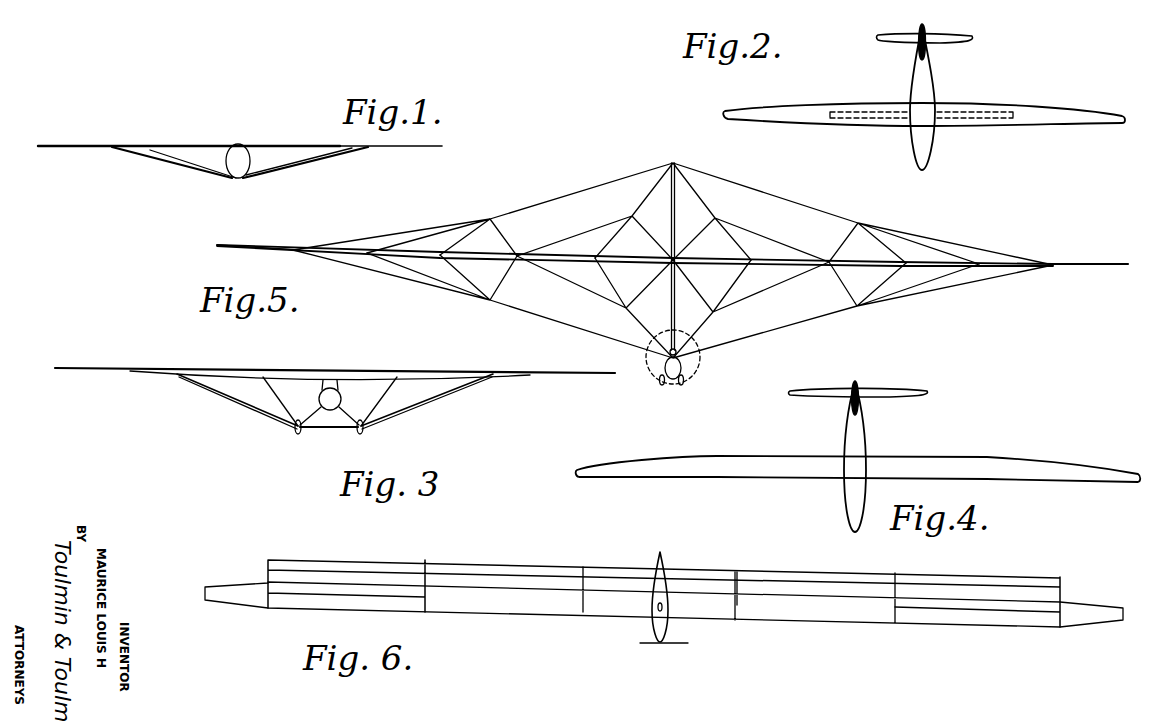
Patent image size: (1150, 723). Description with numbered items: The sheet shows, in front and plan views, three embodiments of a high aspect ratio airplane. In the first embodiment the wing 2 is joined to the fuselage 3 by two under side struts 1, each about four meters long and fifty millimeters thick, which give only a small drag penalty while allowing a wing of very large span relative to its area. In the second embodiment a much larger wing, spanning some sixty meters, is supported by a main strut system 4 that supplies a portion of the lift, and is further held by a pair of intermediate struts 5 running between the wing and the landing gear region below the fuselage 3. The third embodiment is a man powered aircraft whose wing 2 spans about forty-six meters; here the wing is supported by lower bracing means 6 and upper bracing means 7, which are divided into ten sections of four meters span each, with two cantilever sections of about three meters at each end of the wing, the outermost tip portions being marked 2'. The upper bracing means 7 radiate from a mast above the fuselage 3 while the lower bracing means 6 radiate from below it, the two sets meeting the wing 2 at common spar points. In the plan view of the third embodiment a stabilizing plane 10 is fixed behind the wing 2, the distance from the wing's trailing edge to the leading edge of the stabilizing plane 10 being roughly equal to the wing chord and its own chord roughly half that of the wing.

In FIG. 1, the under side struts 1 is at (196, 166).
In FIG. 2, the under side struts 1 is at (985, 113).
In FIG. 1, the wing 2 is at (240, 159).
In FIG. 2, the wing 2 is at (924, 106).
In FIG. 5, the wing 2 is at (672, 224).
In FIG. 3, the wing 2 is at (335, 362).
In FIG. 4, the wing 2 is at (858, 455).
In FIG. 6, the wing 2 is at (664, 582).
In FIG. 5, the wing tip 2' is at (672, 242).
In FIG. 1, the fuselage 3 is at (237, 156).
In FIG. 2, the fuselage 3 is at (933, 83).
In FIG. 5, the fuselage 3 is at (684, 369).
In FIG. 3, the fuselage 3 is at (307, 372).
In FIG. 4, the fuselage 3 is at (859, 442).
In FIG. 6, the fuselage 3 is at (666, 627).
In FIG. 1, the main strut system 4 is at (293, 158).
In FIG. 3, the main strut system 4 is at (451, 396).
In FIG. 3, the intermediate struts 5 is at (378, 407).
In FIG. 5, the lower bracing means 6 is at (733, 291).
In FIG. 5, the upper bracing means 7 is at (755, 233).
In FIG. 6, the stabilizing plane 10 is at (491, 567).